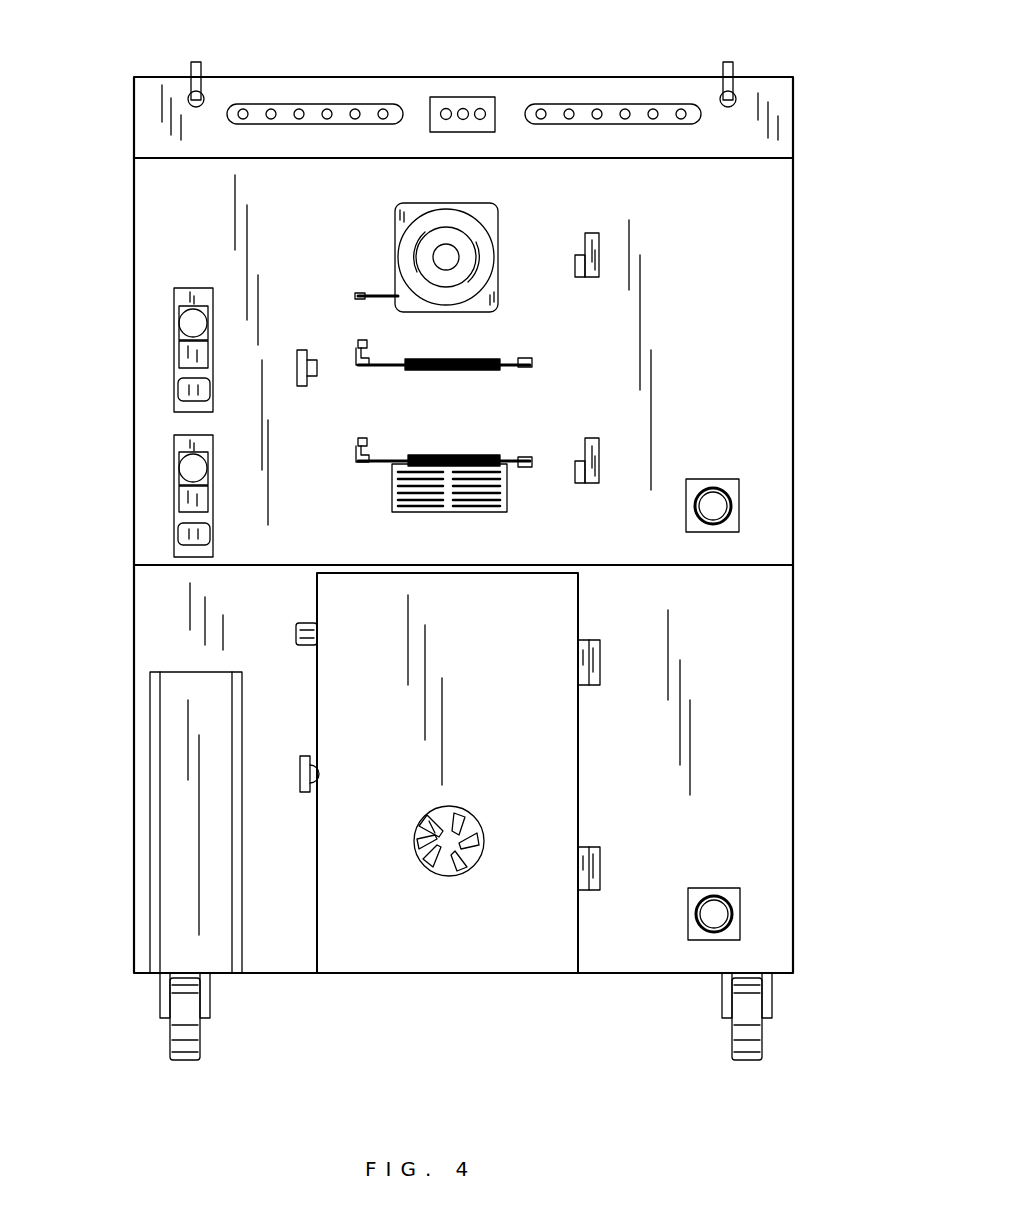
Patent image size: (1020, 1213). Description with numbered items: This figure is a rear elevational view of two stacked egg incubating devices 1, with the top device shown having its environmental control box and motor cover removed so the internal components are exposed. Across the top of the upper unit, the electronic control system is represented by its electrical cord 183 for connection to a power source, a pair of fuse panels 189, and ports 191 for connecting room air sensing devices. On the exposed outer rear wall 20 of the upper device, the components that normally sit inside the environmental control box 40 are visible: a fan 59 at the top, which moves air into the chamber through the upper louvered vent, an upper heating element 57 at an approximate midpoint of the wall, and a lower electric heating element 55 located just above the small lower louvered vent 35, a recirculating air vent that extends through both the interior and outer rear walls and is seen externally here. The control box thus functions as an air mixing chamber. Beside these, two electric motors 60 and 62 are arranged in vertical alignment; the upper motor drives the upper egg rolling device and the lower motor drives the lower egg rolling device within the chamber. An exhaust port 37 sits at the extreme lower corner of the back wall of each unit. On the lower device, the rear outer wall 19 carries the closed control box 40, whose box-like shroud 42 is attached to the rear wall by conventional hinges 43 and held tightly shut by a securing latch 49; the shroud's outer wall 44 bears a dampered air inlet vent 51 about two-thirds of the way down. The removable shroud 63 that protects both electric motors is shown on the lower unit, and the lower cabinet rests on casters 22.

The egg incubating device 1 is at (802, 242).
The rear outer wall 19 is at (748, 798).
The outer rear wall 20 is at (740, 327).
The casters 22 is at (205, 996).
The lower louvered vent 35 is at (395, 488).
The exhaust port 37 is at (716, 506).
The environmental control box 40 is at (596, 926).
The shroud 42 is at (437, 950).
The hinges 43 is at (590, 660).
The outer wall 44 is at (364, 929).
The securing latch 49 is at (304, 790).
The dampered air inlet vent 51 is at (470, 855).
The lower electric heating element 55 is at (485, 460).
The upper heating element 57 is at (485, 365).
The fan 59 is at (460, 248).
The electric motor 60 is at (192, 353).
The electric motor 62 is at (192, 498).
The removable shroud 63 is at (190, 853).
The electrical cord 183 is at (201, 80).
The fuse panels 189 is at (312, 107).
The ports 191 is at (462, 97).